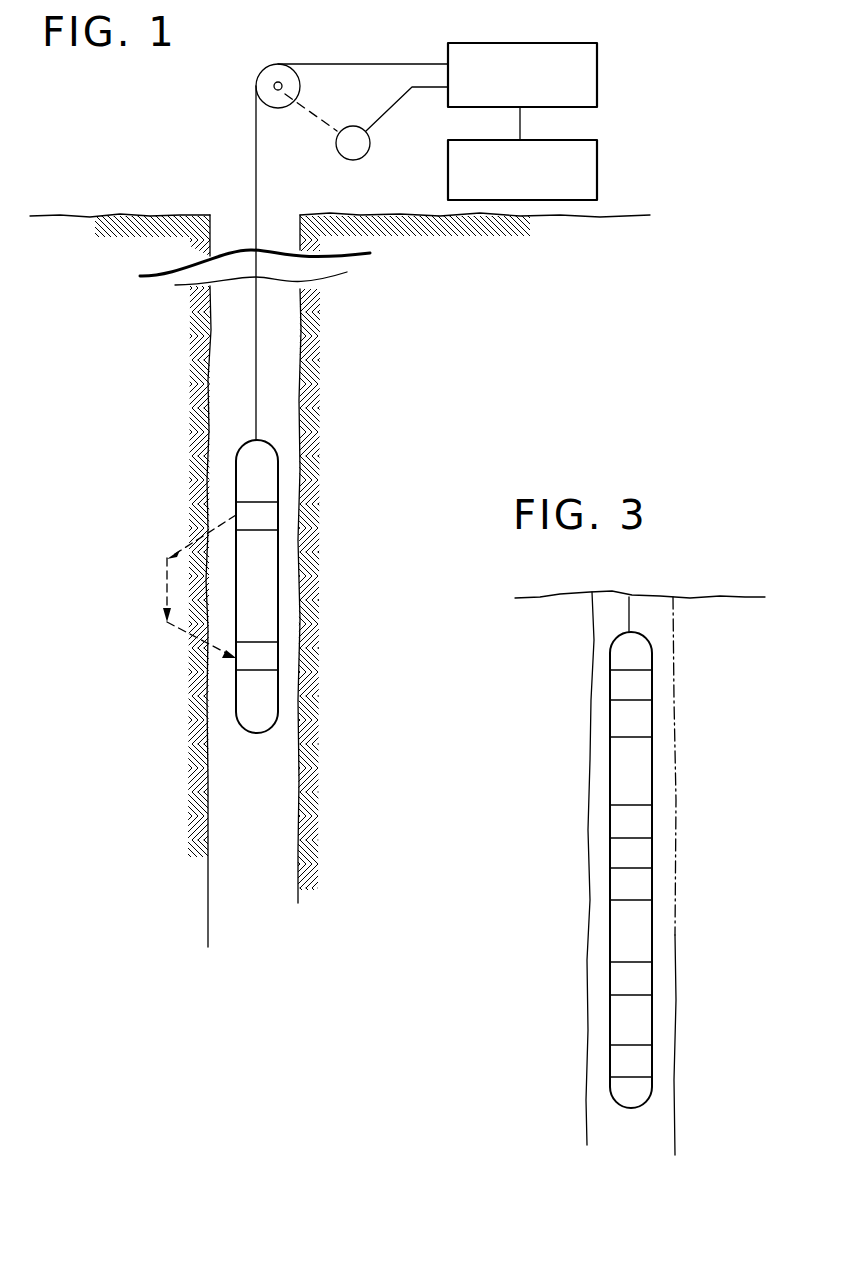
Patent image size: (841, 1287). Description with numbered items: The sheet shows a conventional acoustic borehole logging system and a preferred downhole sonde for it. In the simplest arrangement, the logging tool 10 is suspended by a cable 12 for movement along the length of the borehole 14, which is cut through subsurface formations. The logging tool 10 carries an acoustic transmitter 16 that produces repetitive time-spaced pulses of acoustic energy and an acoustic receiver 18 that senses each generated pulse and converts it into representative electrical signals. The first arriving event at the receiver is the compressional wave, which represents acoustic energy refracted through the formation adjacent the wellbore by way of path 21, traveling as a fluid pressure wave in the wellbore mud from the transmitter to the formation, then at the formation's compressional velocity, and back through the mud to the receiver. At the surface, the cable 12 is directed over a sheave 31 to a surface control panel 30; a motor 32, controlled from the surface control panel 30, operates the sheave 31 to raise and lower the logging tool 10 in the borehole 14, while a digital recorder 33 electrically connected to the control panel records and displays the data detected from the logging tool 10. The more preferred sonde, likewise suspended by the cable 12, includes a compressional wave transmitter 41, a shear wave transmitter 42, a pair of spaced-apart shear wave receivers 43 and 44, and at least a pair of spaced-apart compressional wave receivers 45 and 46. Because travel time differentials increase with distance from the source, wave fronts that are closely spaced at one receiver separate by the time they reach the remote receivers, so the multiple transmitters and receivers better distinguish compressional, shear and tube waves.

In FIG. 1, the logging tool 10 is at (290, 586).
In FIG. 1, the cable 12 is at (257, 369).
In FIG. 3, the cable 12 is at (631, 614).
In FIG. 1, the borehole 14 is at (258, 828).
In FIG. 1, the acoustic transmitter 16 is at (272, 516).
In FIG. 1, the acoustic receiver 18 is at (272, 656).
In FIG. 1, the path 21 is at (167, 590).
In FIG. 1, the surface control panel 30 is at (552, 43).
In FIG. 1, the sheave 31 is at (273, 64).
In FIG. 1, the motor 32 is at (353, 160).
In FIG. 1, the digital recorder 33 is at (558, 140).
In FIG. 3, the compressional wave transmitter 41 is at (649, 683).
In FIG. 3, the shear wave transmitter 42 is at (649, 722).
In FIG. 3, the shear wave receiver 43 is at (649, 822).
In FIG. 3, the shear wave receiver 44 is at (649, 884).
In FIG. 3, the compressional wave receiver 45 is at (649, 979).
In FIG. 3, the compressional wave receiver 46 is at (649, 1062).